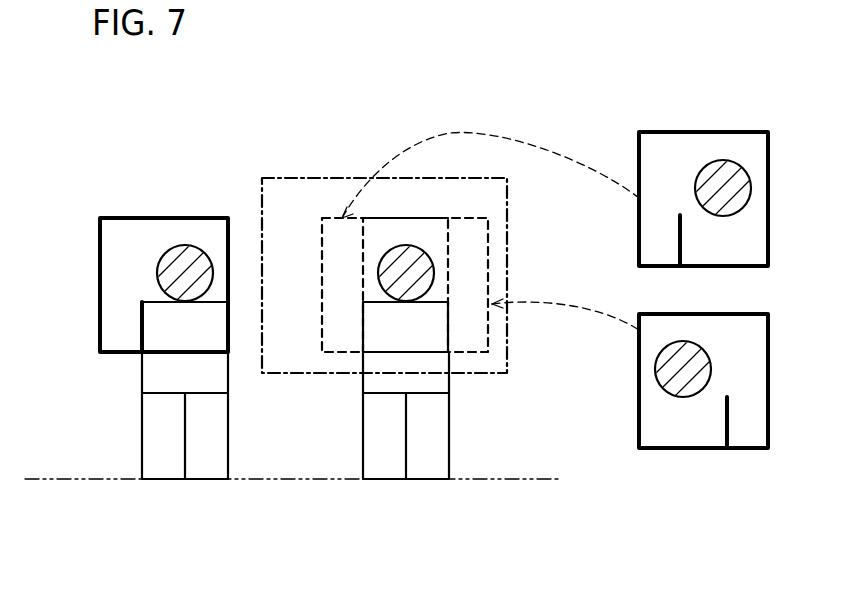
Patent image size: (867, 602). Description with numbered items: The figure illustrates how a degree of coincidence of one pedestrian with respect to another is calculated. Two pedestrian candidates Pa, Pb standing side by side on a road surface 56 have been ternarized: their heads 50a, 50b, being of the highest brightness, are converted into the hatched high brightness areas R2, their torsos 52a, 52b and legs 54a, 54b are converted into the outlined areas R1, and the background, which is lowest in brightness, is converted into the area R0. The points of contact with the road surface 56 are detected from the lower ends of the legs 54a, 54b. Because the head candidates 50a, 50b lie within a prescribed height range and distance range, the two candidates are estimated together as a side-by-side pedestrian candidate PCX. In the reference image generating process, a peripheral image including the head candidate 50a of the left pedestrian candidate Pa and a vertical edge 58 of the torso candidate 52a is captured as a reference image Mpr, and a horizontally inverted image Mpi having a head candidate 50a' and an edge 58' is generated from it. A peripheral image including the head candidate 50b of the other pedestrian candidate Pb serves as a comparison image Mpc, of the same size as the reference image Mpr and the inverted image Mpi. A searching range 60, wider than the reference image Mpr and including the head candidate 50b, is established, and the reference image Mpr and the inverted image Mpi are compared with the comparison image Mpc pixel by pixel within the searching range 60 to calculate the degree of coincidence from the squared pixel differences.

The head candidate 50a is at (438, 218).
The head candidate 50b is at (378, 273).
The head candidate 50a' is at (698, 356).
The torso candidate 52a is at (168, 327).
The torso candidate 52b is at (402, 332).
The leg candidate 54a is at (142, 424).
The leg candidate 54b is at (363, 457).
The road surface 56 is at (480, 482).
The vertical edge 58 is at (396, 283).
The edge 58' is at (694, 422).
The searching range 60 is at (262, 180).
The area R0 is at (72, 466).
The area R1 is at (142, 372).
The high brightness area R2 is at (184, 263).
The pedestrian candidate Pa is at (240, 422).
The pedestrian candidate Pb is at (460, 441).
The side-by-side pedestrian candidate PCX is at (380, 128).
The reference image Mpr is at (100, 288).
The comparison image Mpc is at (340, 228).
The inverted image Mpi is at (488, 244).